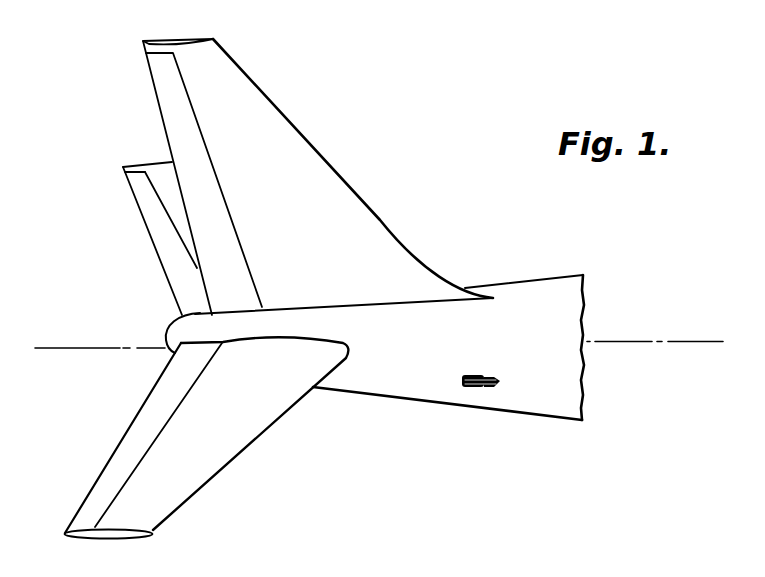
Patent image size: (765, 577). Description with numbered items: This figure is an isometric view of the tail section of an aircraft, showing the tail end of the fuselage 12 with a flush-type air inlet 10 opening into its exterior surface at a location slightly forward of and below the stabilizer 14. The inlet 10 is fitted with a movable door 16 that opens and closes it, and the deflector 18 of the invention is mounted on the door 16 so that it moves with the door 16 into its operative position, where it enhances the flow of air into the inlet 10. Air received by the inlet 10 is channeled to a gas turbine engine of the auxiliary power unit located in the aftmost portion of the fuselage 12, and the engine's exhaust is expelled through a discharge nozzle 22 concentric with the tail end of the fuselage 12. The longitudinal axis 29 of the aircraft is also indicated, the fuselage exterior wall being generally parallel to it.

The air inlet 10 is at (474, 393).
The fuselage 12 is at (543, 288).
The stabilizer 14 is at (202, 482).
The movable door 16 is at (468, 388).
The deflector 18 is at (492, 388).
The discharge nozzle 22 is at (167, 330).
The longitudinal axis 29 is at (60, 349).